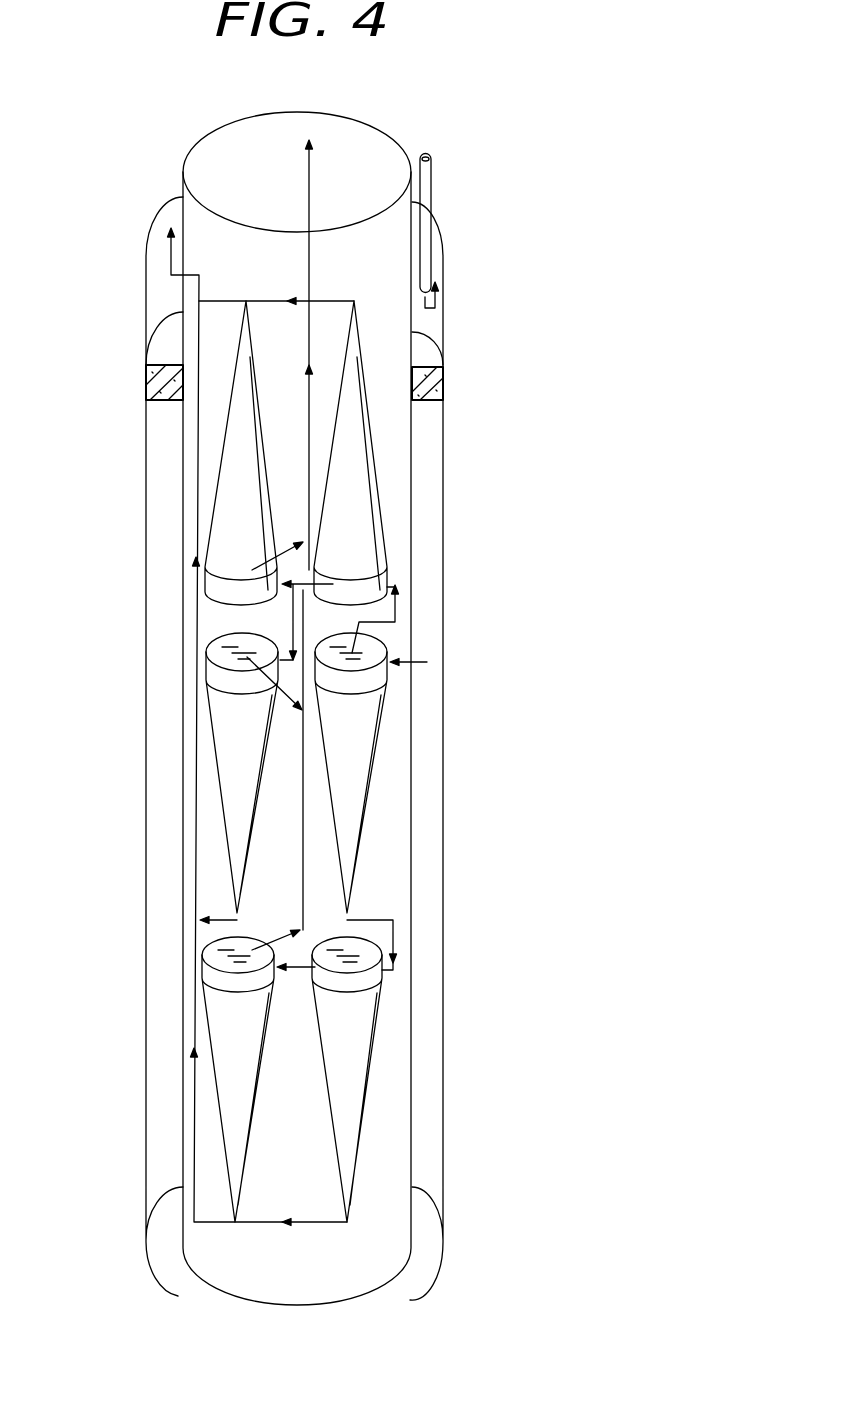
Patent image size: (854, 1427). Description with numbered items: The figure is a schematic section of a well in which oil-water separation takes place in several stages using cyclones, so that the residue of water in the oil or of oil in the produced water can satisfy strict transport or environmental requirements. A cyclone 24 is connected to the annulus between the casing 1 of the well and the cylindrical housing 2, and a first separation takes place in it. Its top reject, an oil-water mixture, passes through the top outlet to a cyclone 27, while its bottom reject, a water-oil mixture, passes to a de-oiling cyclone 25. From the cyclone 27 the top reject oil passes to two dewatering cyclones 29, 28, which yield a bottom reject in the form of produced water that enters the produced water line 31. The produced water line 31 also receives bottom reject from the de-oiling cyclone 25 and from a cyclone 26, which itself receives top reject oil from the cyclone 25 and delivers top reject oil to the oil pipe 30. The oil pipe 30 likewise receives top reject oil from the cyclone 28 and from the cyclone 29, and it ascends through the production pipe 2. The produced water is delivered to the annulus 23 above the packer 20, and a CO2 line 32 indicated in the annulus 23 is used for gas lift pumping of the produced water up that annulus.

The casing 1 is at (443, 553).
The cylindrical housing 2 is at (412, 845).
The packer 20 is at (443, 388).
The annulus 23 is at (432, 330).
The cyclone 24 is at (352, 758).
The de-oiling cyclone 25 is at (345, 1070).
The cyclone 26 is at (218, 1018).
The cyclone 27 is at (373, 558).
The dewatering cyclone 28 is at (230, 806).
The dewatering cyclone 29 is at (232, 445).
The oil pipe 30 is at (303, 885).
The produced water line 31 is at (193, 893).
The CO2 line 32 is at (432, 260).